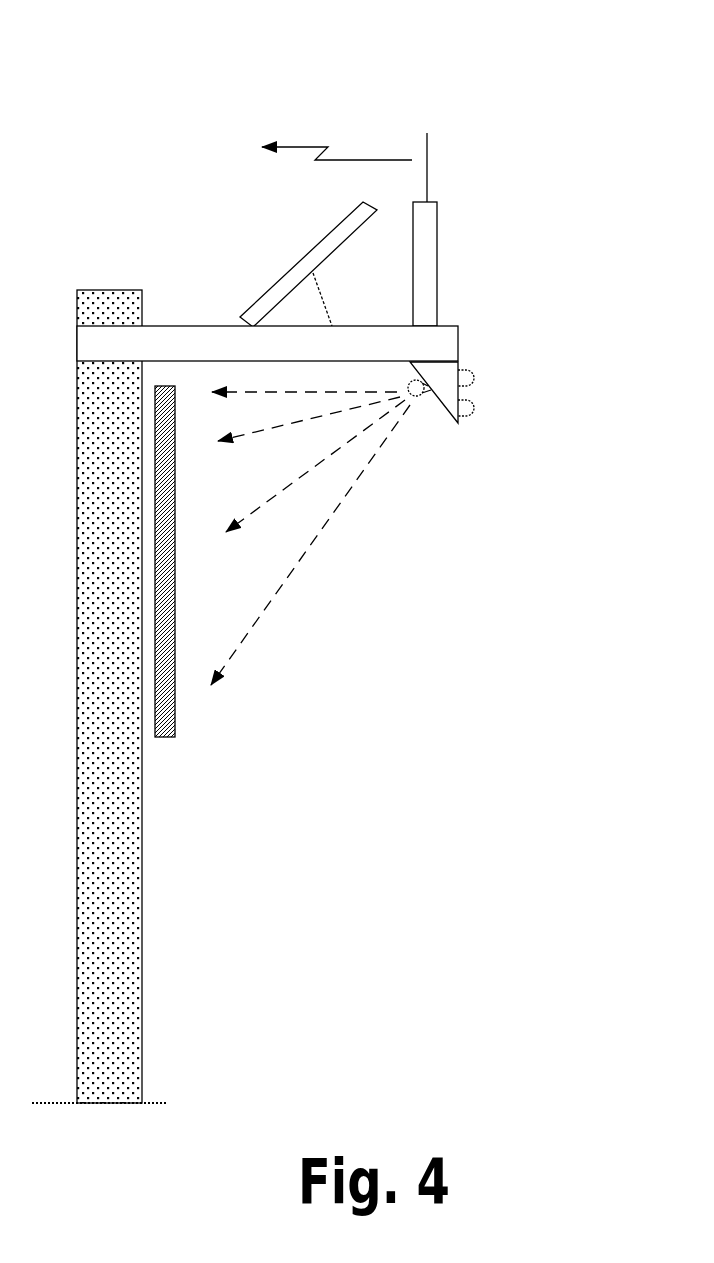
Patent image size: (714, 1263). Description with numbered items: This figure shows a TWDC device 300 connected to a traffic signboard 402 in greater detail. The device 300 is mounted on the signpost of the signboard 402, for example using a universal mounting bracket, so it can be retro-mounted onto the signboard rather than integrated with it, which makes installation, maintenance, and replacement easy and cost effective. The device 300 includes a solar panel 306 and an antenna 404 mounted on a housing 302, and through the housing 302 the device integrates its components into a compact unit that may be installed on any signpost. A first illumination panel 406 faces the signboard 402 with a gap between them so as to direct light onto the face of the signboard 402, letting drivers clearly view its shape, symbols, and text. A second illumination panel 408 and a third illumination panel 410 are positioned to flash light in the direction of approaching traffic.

The device 300 is at (366, 105).
The housing 302 is at (418, 342).
The solar panel 306 is at (260, 279).
The signboard 402 is at (181, 713).
The antenna 404 is at (428, 261).
The first illumination panel 406 is at (413, 406).
The second illumination panel 408 is at (485, 373).
The third illumination panel 410 is at (486, 418).